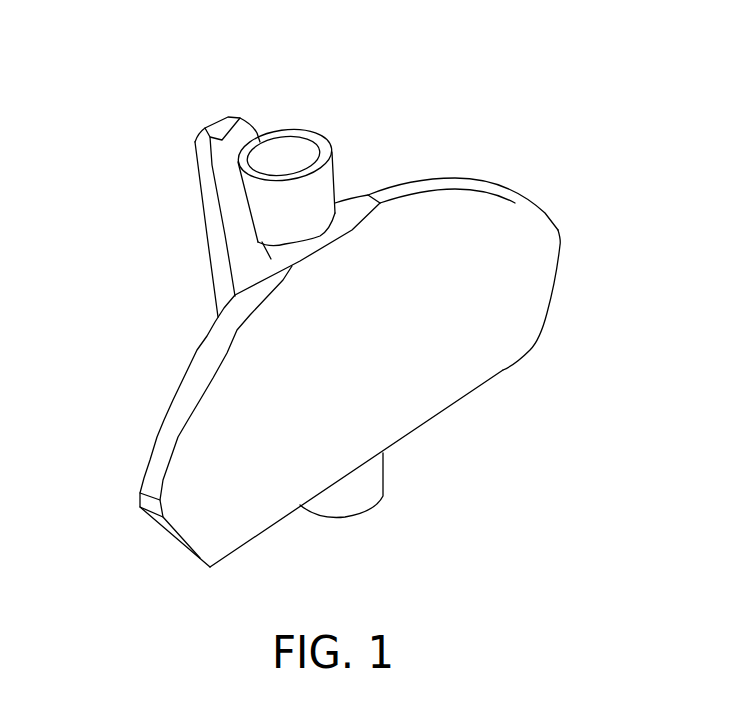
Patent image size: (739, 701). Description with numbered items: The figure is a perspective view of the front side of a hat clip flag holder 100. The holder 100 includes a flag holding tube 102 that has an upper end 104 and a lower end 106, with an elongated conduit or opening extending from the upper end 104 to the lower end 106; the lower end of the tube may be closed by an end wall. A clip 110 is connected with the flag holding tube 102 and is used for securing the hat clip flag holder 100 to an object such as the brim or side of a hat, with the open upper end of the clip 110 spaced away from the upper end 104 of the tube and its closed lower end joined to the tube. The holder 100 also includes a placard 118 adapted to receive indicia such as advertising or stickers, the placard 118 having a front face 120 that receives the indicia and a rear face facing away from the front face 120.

The hat clip flag holder 100 is at (183, 85).
The flag holding tube 102 is at (318, 201).
The upper end 104 is at (382, 113).
The lower end 106 is at (420, 463).
The clip 110 is at (208, 212).
The placard 118 is at (557, 226).
The front face 120 is at (545, 315).